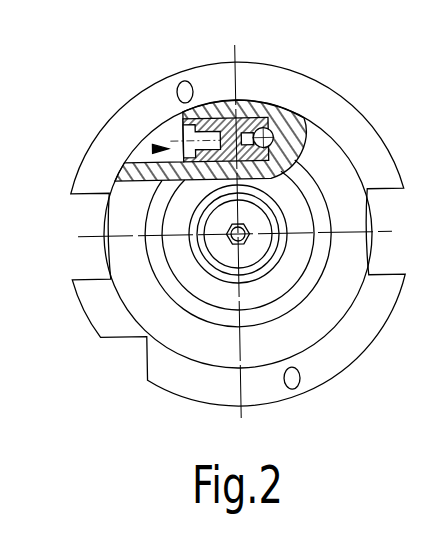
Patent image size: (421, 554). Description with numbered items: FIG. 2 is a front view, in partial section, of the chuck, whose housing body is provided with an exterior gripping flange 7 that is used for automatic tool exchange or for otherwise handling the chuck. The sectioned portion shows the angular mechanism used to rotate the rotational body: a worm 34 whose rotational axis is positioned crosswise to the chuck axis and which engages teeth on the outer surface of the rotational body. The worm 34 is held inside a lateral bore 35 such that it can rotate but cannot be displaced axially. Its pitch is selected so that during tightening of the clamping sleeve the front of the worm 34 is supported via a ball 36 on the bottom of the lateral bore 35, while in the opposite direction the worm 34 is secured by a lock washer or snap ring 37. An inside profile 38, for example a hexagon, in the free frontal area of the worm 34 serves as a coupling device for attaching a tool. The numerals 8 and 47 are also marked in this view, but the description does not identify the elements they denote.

The gripping flange 7 is at (192, 370).
The bore 8 is at (166, 243).
The worm 34 is at (254, 103).
The lateral bore 35 is at (156, 147).
The ball 36 is at (298, 116).
The lock washer or snap ring 37 is at (183, 122).
The inside profile 38 is at (186, 126).
The line 47 is at (5, 552).